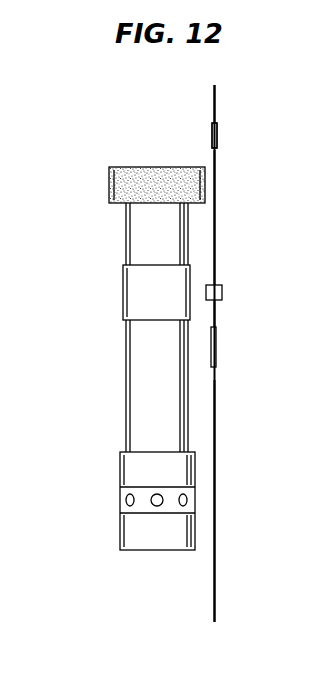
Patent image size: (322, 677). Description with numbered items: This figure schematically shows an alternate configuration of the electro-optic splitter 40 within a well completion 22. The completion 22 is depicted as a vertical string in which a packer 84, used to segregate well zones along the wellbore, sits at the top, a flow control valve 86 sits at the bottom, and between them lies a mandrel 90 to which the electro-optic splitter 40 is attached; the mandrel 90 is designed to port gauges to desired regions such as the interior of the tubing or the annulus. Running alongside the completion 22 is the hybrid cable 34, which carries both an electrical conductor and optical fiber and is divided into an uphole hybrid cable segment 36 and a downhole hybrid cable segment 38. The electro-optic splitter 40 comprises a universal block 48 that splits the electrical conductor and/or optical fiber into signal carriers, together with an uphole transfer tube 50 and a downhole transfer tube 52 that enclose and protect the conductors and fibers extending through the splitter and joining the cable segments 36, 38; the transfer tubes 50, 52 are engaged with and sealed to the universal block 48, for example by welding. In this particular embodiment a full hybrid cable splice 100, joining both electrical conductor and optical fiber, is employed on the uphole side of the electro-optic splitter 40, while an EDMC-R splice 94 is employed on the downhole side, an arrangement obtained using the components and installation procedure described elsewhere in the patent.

The completion 22 is at (118, 360).
The hybrid cable 34 is at (203, 95).
The uphole hybrid cable segment 36 is at (216, 110).
The downhole hybrid cable segment 38 is at (216, 421).
The electro-optic splitter 40 is at (229, 127).
The universal block 48 is at (223, 292).
The uphole transfer tube 50 is at (216, 238).
The downhole transfer tube 52 is at (216, 311).
The packer 84 is at (109, 185).
The flow control valve 86 is at (120, 530).
The mandrel 90 is at (123, 300).
The EDMC-R splice 94 is at (217, 346).
The full hybrid cable splice 100 is at (218, 145).